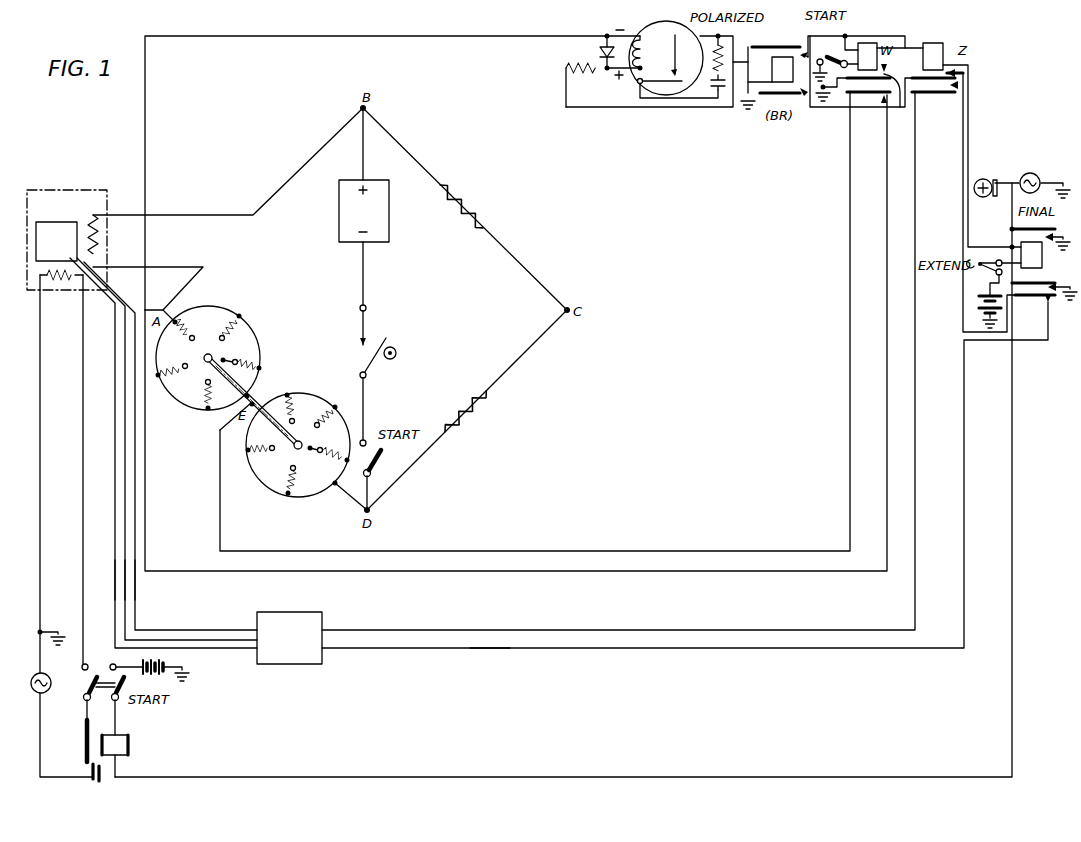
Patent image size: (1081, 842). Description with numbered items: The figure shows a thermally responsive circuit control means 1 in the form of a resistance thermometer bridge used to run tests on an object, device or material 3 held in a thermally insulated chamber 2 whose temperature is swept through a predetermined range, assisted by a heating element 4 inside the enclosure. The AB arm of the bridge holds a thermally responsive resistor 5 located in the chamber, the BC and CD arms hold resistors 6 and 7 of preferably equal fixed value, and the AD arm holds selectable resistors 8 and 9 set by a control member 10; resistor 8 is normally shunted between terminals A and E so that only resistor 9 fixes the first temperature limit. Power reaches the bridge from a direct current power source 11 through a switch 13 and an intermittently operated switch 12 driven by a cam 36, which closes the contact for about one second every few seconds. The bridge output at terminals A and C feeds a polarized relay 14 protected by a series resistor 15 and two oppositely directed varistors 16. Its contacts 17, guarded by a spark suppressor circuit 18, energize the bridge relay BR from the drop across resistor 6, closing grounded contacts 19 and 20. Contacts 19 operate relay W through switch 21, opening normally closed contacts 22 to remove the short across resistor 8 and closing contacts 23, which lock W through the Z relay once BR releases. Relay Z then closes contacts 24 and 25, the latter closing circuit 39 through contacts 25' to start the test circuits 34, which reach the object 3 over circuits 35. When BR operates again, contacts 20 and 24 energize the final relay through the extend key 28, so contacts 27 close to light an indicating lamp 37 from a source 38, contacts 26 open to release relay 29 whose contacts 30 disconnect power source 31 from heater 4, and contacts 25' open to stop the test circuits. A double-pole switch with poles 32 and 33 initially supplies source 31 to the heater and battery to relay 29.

The thermally responsive circuit control means 1 is at (452, 309).
The chamber 2 is at (52, 192).
The object under test 3 is at (52, 222).
The heating element 4 is at (60, 282).
The thermally responsive resistor 5 is at (100, 240).
The resistor 6 is at (476, 205).
The resistor 7 is at (470, 415).
The resistor 8 is at (255, 333).
The resistor 9 is at (320, 394).
The control member 10 is at (258, 396).
The direct current power source 11 is at (389, 224).
The intermittently operated switch 12 is at (385, 340).
The switch 13 is at (378, 470).
The polarized relay 14 is at (643, 30).
The series resistor 15 is at (585, 72).
The varistors 16 is at (599, 50).
The contacts of the polarized relay 17 is at (682, 74).
The spark suppressor circuit 18 is at (712, 93).
The contacts of relay BR 19 is at (800, 46).
The contacts of relay BR 20 is at (804, 93).
The switch 21 is at (845, 58).
The contacts of relay W 22 is at (880, 100).
The contacts of relay W 23 is at (900, 108).
The contacts of relay Z 24 is at (966, 72).
The contacts of relay Z 25 is at (958, 84).
The contacts of the final relay 25' is at (1046, 309).
The contacts of the final relay 26 is at (1050, 282).
The contacts of the final relay 27 is at (1052, 232).
The extend key 28 is at (985, 287).
The relay 29 is at (128, 745).
The contacts of relay 29 30 is at (93, 782).
The power source 31 is at (46, 692).
The pole of double-pole switch 32 is at (88, 664).
The pole of double-pole switch 33 is at (128, 661).
The test circuits 34 is at (290, 665).
The circuits 35 is at (148, 600).
The cam 36 is at (396, 353).
The indicating lamp 37 is at (984, 178).
The source 38 is at (1036, 172).
The circuit 39 is at (492, 650).